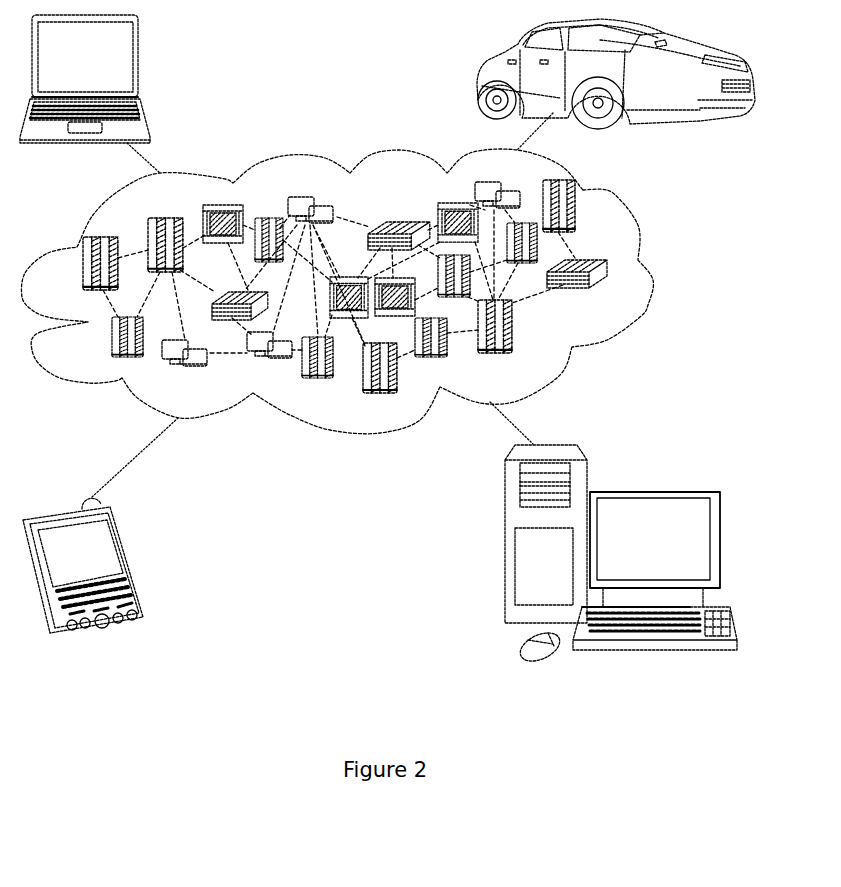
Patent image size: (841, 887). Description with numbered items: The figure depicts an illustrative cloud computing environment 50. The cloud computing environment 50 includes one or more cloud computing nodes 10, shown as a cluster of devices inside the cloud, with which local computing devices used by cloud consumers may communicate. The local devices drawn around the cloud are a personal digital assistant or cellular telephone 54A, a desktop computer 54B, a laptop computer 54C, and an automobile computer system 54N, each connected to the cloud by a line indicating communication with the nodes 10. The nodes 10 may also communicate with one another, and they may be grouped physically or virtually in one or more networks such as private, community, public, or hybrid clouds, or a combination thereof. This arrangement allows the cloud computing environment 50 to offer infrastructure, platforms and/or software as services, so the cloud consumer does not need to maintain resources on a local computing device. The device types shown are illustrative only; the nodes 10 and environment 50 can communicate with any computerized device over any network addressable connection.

The cloud computing node 10 is at (605, 293).
The cloud computing environment 50 is at (359, 291).
The personal digital assistant or cellular telephone 54A is at (127, 563).
The desktop computer 54B is at (652, 492).
The laptop computer 54C is at (140, 62).
The automobile computer system 54N is at (481, 79).